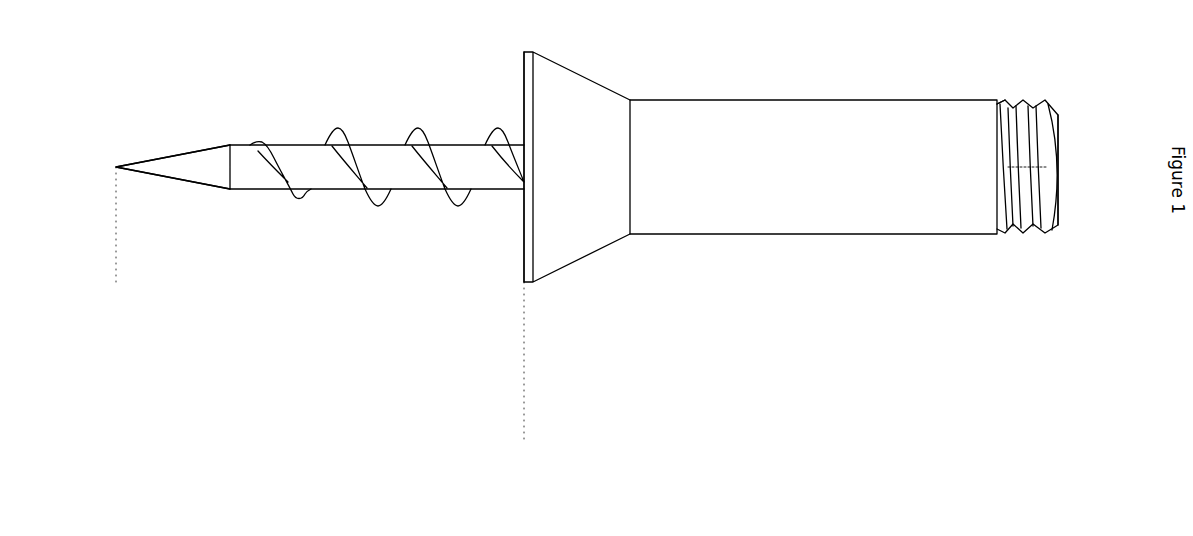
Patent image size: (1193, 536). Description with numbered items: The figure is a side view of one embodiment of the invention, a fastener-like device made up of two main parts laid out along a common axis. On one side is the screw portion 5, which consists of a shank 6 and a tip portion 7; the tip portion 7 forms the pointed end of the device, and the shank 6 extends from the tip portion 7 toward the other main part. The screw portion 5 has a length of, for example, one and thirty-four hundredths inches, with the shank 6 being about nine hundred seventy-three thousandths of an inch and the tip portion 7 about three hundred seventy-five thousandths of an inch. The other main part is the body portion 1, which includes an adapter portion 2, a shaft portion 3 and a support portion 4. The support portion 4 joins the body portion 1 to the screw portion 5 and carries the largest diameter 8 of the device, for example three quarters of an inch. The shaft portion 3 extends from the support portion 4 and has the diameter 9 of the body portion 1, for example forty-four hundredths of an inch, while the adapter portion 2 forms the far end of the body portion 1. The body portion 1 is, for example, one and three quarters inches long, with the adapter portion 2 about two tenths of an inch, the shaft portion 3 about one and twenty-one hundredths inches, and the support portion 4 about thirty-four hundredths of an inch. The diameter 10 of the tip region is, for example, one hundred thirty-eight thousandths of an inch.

The body portion 1 is at (1064, 409).
The adapter portion 2 is at (1058, 440).
The shaft portion 3 is at (1001, 340).
The support portion 4 is at (634, 340).
The screw portion 5 is at (538, 423).
The shank 6 is at (116, 282).
The tip portion 7 is at (116, 167).
The largest diameter 8 is at (524, 282).
The diameter of the body portion 9 is at (1085, 235).
The diameter of the tip region 10 is at (232, 189).